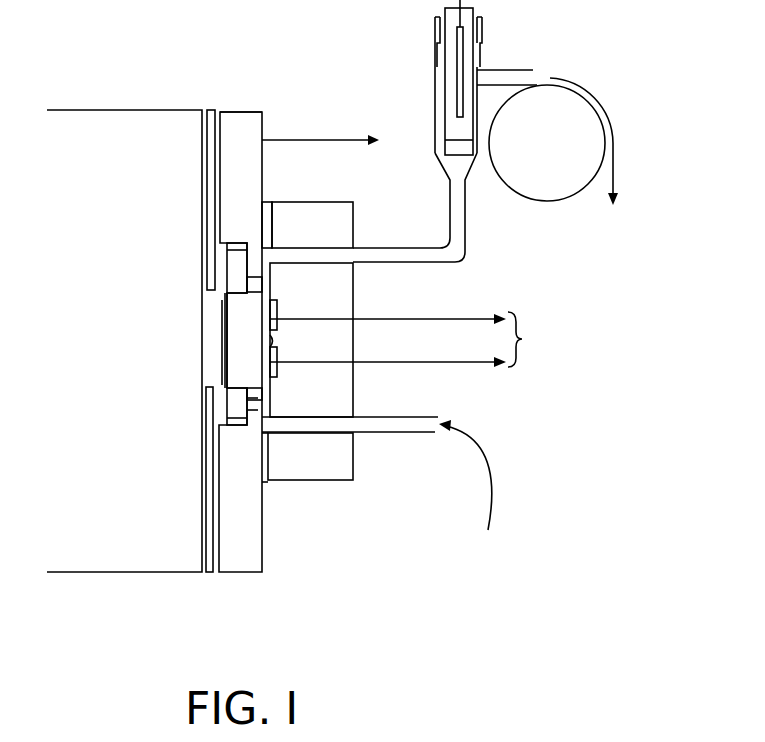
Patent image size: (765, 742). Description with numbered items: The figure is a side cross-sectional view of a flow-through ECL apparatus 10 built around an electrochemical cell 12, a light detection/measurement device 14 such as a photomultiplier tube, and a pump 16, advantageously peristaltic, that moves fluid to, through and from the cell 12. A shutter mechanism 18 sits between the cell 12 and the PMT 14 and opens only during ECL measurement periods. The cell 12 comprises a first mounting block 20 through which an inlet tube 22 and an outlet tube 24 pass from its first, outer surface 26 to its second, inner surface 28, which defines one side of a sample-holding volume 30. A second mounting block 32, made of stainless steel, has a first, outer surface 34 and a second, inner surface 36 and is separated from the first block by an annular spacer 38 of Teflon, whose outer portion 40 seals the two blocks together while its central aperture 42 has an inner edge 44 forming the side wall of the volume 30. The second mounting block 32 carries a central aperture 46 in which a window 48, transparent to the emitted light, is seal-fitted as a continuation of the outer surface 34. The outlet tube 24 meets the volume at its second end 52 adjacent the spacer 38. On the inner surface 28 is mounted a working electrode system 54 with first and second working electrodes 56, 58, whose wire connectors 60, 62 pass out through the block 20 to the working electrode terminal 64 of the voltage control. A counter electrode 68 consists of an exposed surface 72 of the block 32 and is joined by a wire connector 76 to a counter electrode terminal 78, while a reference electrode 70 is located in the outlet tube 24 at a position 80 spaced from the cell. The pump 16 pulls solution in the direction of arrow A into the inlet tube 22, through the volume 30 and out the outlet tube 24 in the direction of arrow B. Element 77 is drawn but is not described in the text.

The ECL apparatus 10 is at (268, 28).
The electrochemical cell 12 is at (346, 568).
The light detection/measurement device 14 is at (113, 573).
The pump 16 is at (560, 202).
The shutter mechanism 18 is at (207, 110).
The first mounting block 20 is at (333, 481).
The inlet tube 22 is at (422, 433).
The outlet tube 24 is at (413, 248).
The first, outer surface 26 is at (353, 405).
The second, inner surface 28 is at (270, 395).
The sample-holding volume 30 is at (262, 354).
The second mounting block 32 is at (243, 577).
The first, outer surface 34 is at (258, 410).
The second, inner surface 36 is at (217, 577).
The annular spacer 38 is at (263, 482).
The outer portion 40 is at (282, 215).
The central aperture 42 is at (222, 260).
The inner edge 44 is at (273, 247).
The central aperture 46 is at (202, 313).
The window 48 is at (228, 310).
The second end 52 is at (262, 238).
The working electrode system 54 is at (400, 293).
The first working electrode 56 is at (280, 314).
The second working electrode 58 is at (280, 360).
The wire connector 60 is at (418, 317).
The wire connector 62 is at (420, 360).
The working electrode terminal 64 is at (555, 339).
The counter electrode 68 is at (265, 137).
The reference electrode 70 is at (462, 52).
The exposed surface 72 is at (222, 302).
The wire connector 76 is at (357, 137).
The lower clamp member 77 is at (258, 400).
The counter electrode terminal 78 is at (403, 140).
The position 80 is at (435, 73).
The arrow A is at (467, 490).
The arrow B is at (586, 162).